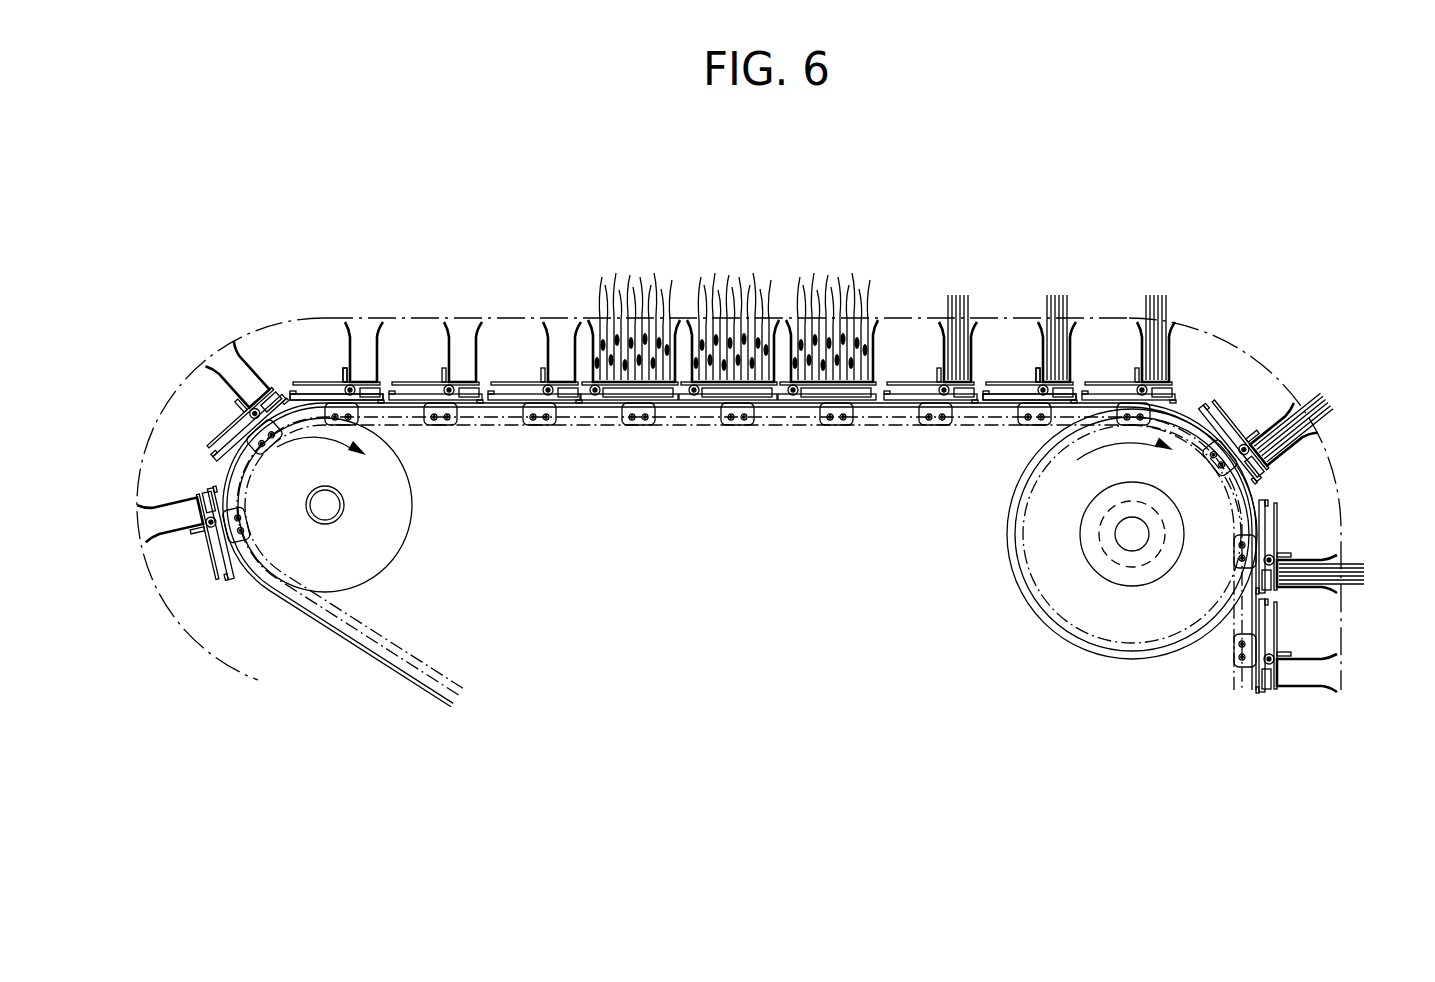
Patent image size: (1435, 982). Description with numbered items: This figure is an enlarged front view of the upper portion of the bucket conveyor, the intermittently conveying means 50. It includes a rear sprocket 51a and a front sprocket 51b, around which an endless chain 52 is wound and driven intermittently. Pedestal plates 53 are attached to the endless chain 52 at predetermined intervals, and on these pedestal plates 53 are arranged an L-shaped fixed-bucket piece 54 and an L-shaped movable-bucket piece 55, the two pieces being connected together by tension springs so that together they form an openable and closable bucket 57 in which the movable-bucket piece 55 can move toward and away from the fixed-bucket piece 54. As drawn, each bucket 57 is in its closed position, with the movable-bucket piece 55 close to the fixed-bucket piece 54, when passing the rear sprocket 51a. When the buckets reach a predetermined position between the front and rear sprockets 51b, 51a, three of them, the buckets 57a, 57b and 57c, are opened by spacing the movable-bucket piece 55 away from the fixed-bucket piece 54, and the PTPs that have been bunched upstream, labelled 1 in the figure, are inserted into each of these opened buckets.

The seedling 1 is at (601, 330).
The intermittently conveying means 50 is at (227, 275).
The rear sprocket 51a is at (397, 532).
The front sprocket 51b is at (1033, 528).
The endless chain 52 is at (637, 427).
The pedestal plate 53 is at (505, 400).
The fixed-bucket piece 54 is at (395, 330).
The movable-bucket piece 55 is at (335, 330).
The bucket 57 is at (360, 323).
The bucket 57a is at (870, 317).
The bucket 57b is at (772, 317).
The bucket 57c is at (672, 317).